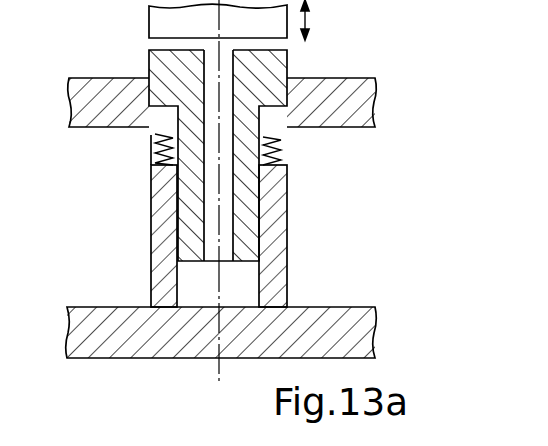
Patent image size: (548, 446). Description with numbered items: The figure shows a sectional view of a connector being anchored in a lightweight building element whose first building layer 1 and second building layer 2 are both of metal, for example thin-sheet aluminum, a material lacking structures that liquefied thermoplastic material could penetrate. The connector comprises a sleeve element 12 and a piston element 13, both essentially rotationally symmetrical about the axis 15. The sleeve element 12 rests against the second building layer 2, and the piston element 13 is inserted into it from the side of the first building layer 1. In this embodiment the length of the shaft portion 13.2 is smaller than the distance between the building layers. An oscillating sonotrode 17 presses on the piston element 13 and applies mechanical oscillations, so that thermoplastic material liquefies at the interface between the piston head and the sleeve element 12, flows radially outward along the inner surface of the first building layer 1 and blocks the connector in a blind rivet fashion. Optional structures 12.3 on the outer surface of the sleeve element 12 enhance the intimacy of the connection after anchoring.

The first building layer 1 is at (360, 103).
The second building layer 2 is at (357, 332).
The sleeve element 12 is at (277, 253).
The structures 12.3 is at (292, 152).
The piston element 13 is at (190, 175).
The shaft portion 13.2 is at (240, 209).
The axis 15 is at (217, 373).
The sonotrode 17 is at (162, 21).